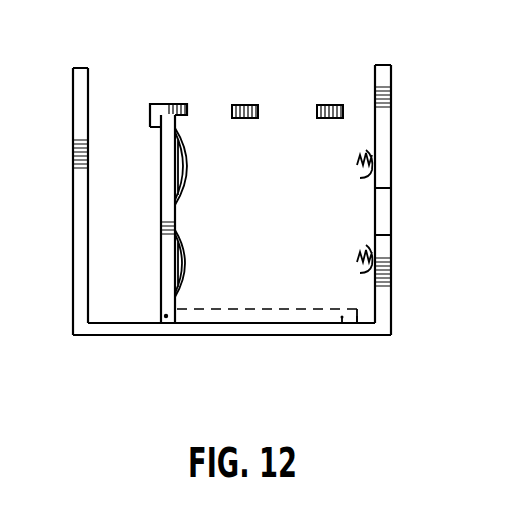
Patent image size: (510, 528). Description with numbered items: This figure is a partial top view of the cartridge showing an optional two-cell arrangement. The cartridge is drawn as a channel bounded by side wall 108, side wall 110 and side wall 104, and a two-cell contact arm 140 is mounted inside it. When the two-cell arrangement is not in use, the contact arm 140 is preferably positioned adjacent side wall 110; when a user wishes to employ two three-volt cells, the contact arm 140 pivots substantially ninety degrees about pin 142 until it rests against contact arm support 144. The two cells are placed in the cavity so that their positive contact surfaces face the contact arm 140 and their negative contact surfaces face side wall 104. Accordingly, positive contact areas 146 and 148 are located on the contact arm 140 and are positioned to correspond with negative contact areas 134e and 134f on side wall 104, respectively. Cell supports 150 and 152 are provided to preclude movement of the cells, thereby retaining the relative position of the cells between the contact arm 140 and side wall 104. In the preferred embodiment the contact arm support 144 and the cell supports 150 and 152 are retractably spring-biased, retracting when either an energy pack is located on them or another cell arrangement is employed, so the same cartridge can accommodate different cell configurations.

The side wall 104 is at (385, 122).
The left side wall 108 is at (80, 97).
The side wall 110 is at (266, 338).
The negative contact area 134e is at (378, 188).
The negative contact area 134f is at (378, 237).
The two-cell contact arm 140 is at (162, 258).
The pin 142 is at (167, 319).
The contact arm support 144 is at (168, 104).
The positive contact area 146 is at (187, 166).
The positive contact area 148 is at (186, 262).
The cell support 150 is at (243, 104).
The cell support 152 is at (327, 104).